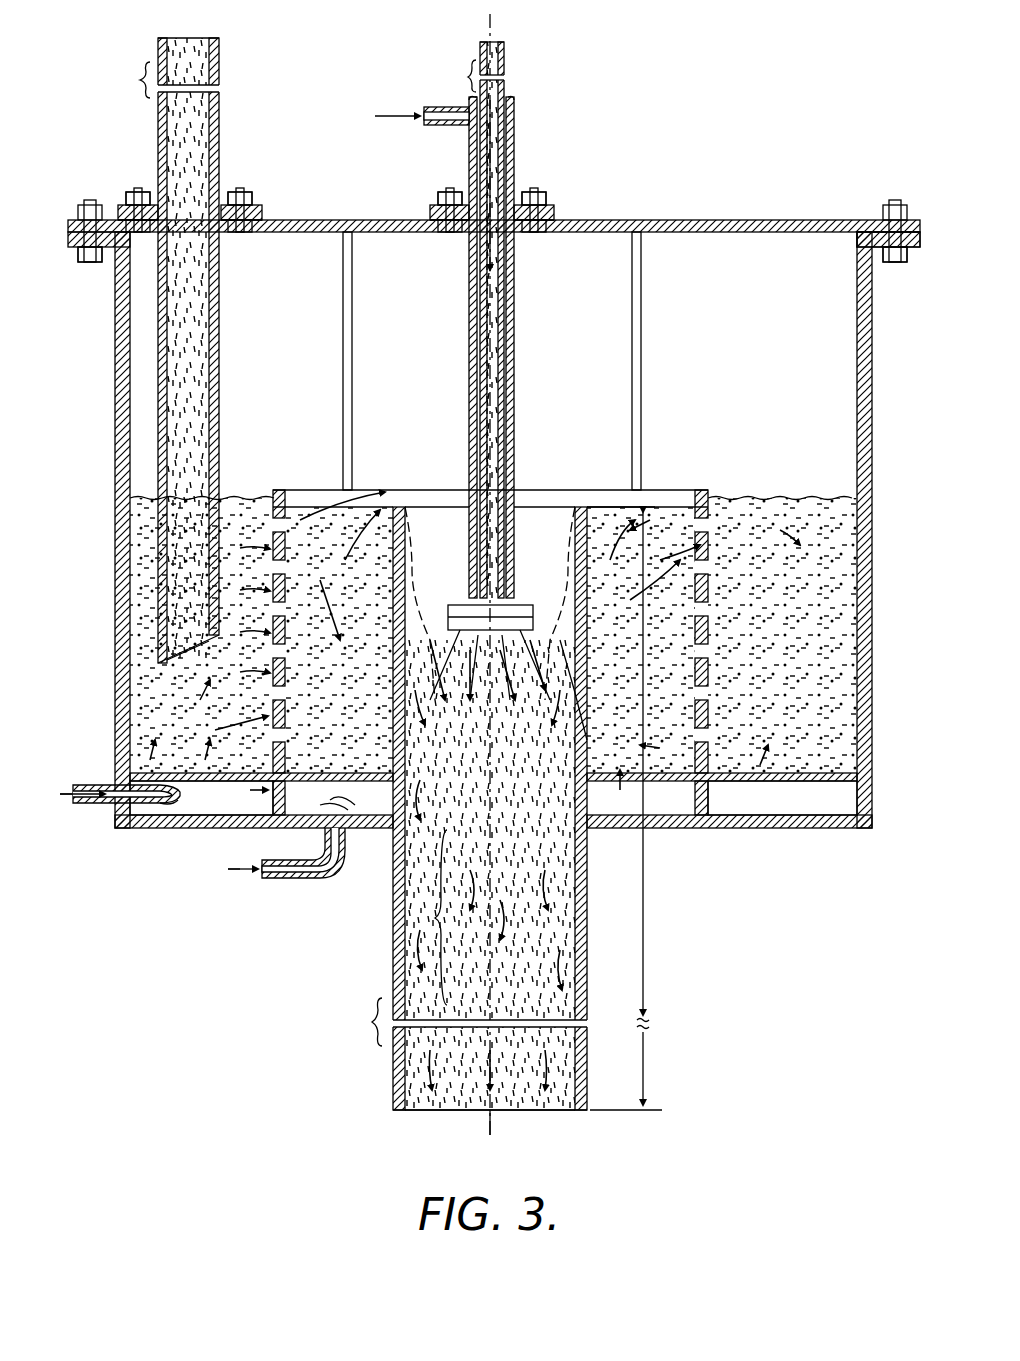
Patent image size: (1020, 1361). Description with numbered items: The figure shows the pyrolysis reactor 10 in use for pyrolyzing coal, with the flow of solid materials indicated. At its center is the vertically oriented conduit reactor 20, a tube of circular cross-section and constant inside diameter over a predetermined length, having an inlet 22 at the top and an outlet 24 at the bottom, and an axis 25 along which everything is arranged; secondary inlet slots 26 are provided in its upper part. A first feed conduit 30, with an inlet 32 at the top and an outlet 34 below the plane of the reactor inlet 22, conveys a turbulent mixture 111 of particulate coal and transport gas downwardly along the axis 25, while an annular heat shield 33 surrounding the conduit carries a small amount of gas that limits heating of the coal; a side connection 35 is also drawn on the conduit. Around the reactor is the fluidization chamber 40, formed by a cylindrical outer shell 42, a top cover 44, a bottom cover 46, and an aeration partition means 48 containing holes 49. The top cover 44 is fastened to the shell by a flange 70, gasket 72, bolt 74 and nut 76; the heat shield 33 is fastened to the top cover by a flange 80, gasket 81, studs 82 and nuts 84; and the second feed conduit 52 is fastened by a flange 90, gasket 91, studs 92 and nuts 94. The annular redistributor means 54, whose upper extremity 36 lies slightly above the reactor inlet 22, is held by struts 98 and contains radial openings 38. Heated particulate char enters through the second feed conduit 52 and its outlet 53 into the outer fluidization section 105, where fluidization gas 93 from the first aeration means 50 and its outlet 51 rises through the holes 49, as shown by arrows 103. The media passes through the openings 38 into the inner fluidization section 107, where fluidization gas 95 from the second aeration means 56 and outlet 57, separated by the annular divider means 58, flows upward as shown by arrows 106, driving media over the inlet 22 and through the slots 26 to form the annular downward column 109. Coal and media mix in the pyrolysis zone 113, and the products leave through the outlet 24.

The pyrolysis reactor 10 is at (226, 970).
The conduit reactor 20 is at (605, 918).
The reactor inlet 22 is at (433, 507).
The reactor outlet 24 is at (455, 1110).
The reactor axis 25 is at (490, 1135).
The secondary inlet slots 26 is at (450, 610).
The first feed conduit 30 is at (514, 312).
The first feed conduit inlet 32 is at (500, 42).
The annular heat shield 33 is at (514, 275).
The first feed conduit outlet 34 is at (520, 606).
The liquid inlet 35 is at (380, 116).
The upper extremity of redistributor means 36 is at (540, 490).
The openings 38 is at (290, 584).
The fluidization chamber 40 is at (770, 436).
The cylindrical outer shell 42 is at (872, 455).
The top cover 44 is at (745, 220).
The bottom cover 46 is at (780, 828).
The aeration partition means 48 is at (800, 773).
The holes 49 is at (180, 773).
The first aeration means 50 is at (105, 828).
The first aeration means outlet 51 is at (172, 828).
The second feed conduit 52 is at (219, 365).
The second feed conduit outlet 53 is at (200, 655).
The annular redistributor means 54 is at (708, 625).
The second aeration means 56 is at (335, 878).
The second aeration means outlet 57 is at (340, 815).
The annular divider means 58 is at (273, 815).
The flange 70 is at (920, 248).
The gasket 72 is at (920, 225).
The bolt 74 is at (88, 205).
The nut 76 is at (80, 262).
The flange 80 is at (554, 208).
The gasket 81 is at (554, 220).
The studs 82 is at (450, 188).
The nuts 84 is at (438, 200).
The flange 90 is at (255, 205).
The gasket 91 is at (262, 220).
The studs 92 is at (138, 188).
The fluidization gas 93 is at (78, 803).
The nuts 94 is at (126, 198).
The fluidization gas 95 is at (232, 869).
The struts 98 is at (343, 293).
The arrows 103 is at (195, 781).
The outer fluidization section 105 is at (800, 642).
The arrows 106 is at (300, 773).
The inner fluidization section 107 is at (680, 642).
The column 109 is at (587, 738).
The turbulent mixture 111 is at (498, 352).
The pyrolysis zone 113 is at (488, 865).